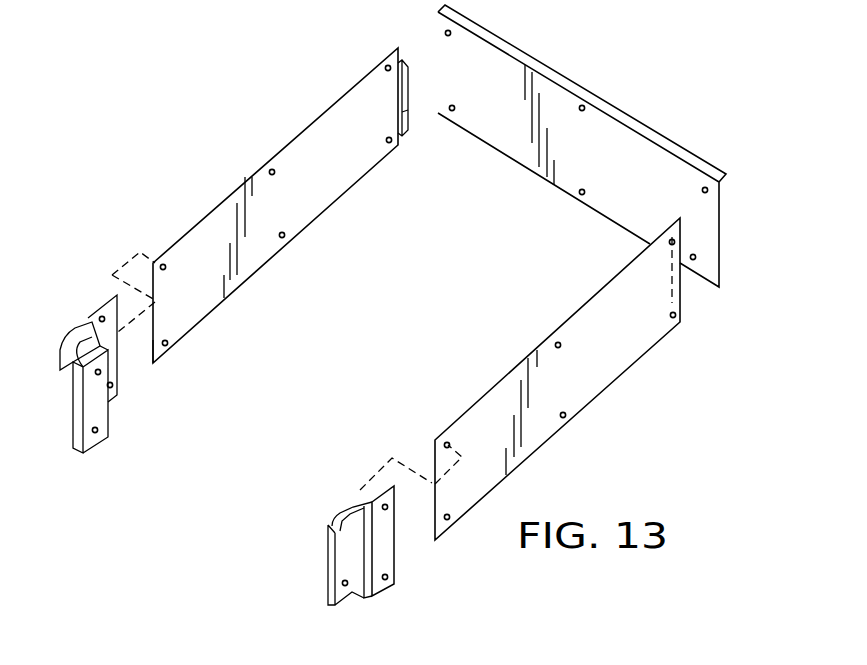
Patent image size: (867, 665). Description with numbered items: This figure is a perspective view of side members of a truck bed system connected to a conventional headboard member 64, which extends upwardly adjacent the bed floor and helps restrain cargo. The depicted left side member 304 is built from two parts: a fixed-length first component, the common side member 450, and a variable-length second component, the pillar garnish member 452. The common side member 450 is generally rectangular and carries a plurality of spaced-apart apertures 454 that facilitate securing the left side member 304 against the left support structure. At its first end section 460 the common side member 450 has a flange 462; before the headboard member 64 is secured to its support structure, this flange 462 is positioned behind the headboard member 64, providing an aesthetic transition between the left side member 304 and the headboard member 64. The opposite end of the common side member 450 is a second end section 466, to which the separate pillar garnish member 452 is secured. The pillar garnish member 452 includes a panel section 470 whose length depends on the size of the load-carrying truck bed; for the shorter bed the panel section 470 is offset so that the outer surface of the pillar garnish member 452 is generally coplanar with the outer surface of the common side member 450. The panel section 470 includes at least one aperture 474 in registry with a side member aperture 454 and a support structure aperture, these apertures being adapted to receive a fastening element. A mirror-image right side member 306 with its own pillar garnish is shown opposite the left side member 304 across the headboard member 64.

The headboard member 64 is at (625, 103).
The left side member 304 is at (204, 211).
The side panel 306 is at (588, 406).
The common side member 450 is at (300, 205).
The pillar garnish member 452 is at (122, 371).
The apertures 454 is at (271, 169).
The first end section 460 is at (385, 87).
The flange 462 is at (410, 117).
The second end section 466 is at (168, 315).
The panel section 470 is at (110, 338).
The aperture 474 is at (100, 313).